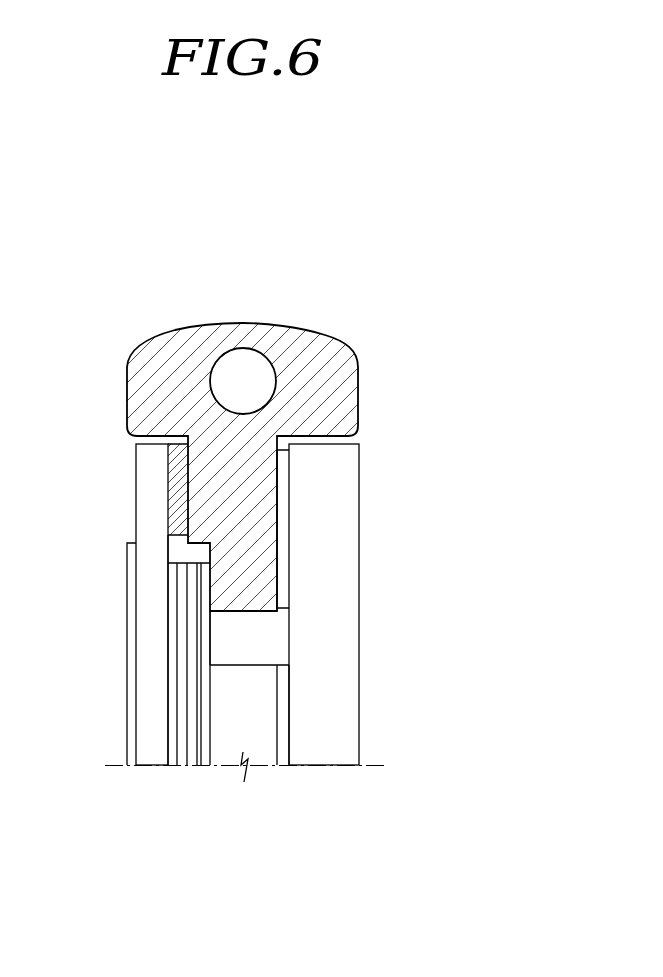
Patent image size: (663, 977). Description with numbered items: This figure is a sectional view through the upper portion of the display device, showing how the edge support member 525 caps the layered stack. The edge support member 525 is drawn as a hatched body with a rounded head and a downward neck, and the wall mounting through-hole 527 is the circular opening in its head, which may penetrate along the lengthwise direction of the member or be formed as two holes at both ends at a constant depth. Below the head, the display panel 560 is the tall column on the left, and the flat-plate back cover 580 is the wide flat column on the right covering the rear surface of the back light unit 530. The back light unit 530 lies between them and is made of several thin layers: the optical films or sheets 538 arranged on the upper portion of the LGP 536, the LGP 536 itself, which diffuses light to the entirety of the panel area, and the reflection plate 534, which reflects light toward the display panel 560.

The edge support member 525 is at (350, 377).
The wall mounting through-hole 527 is at (253, 348).
The display panel 560 is at (147, 740).
The flat-plate back cover 580 is at (344, 734).
The back light unit 530 is at (233, 833).
The reflection plate 534 is at (288, 753).
The LGP 536 is at (260, 753).
The optical films or sheets 538 is at (190, 752).